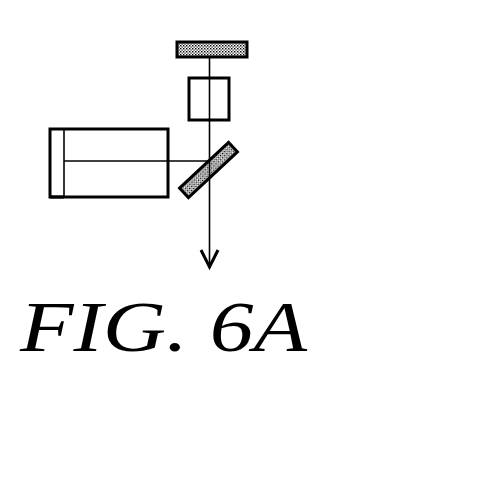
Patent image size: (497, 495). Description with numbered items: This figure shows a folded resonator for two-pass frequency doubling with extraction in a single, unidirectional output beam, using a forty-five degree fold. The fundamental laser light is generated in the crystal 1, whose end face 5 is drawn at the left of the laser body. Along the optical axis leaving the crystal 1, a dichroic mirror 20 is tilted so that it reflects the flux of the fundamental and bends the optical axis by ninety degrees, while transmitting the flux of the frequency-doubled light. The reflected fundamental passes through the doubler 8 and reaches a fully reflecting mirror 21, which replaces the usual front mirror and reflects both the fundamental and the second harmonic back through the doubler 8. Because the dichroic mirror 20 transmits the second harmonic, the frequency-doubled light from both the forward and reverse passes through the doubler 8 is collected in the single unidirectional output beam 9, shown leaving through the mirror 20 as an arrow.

The crystal 1 is at (130, 128).
The laser end face 5 is at (57, 188).
The doubler 8 is at (229, 98).
The output beam 9 is at (210, 214).
The dichroic mirror 20 is at (230, 144).
The fully reflecting mirror 21 is at (202, 40).